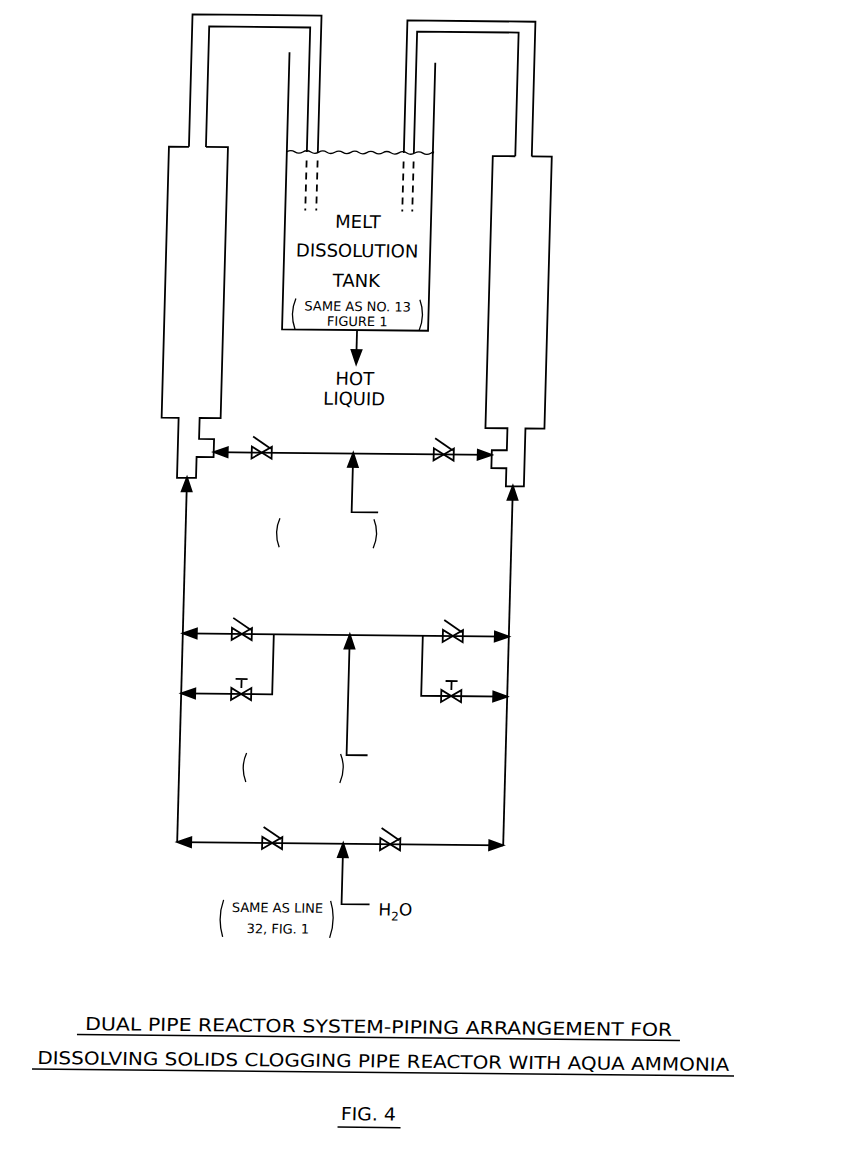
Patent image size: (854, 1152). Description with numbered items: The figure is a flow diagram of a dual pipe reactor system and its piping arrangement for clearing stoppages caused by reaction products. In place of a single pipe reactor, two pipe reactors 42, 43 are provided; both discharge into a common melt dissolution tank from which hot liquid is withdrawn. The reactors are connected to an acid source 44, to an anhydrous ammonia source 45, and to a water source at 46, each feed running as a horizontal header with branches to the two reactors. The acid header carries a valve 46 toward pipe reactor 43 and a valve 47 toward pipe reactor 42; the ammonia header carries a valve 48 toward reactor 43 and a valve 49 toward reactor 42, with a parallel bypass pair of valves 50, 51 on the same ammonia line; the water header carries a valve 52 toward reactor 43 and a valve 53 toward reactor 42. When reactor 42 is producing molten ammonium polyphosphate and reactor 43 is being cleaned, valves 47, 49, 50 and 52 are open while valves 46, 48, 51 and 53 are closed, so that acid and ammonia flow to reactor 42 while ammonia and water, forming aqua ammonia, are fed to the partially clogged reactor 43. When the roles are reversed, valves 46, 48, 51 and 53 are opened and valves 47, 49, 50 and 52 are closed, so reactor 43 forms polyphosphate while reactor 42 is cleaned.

The pipe reactor 42 is at (543, 251).
The pipe reactor 43 is at (160, 214).
The acid source 44 is at (350, 472).
The anhydrous ammonia source 45 is at (349, 722).
The valve 46 is at (261, 461).
The valve 47 is at (445, 462).
The valve 48 is at (247, 622).
The valve 49 is at (457, 622).
The valve 50 is at (246, 704).
The valve 51 is at (457, 704).
The valve 52 is at (290, 836).
The valve 53 is at (406, 836).